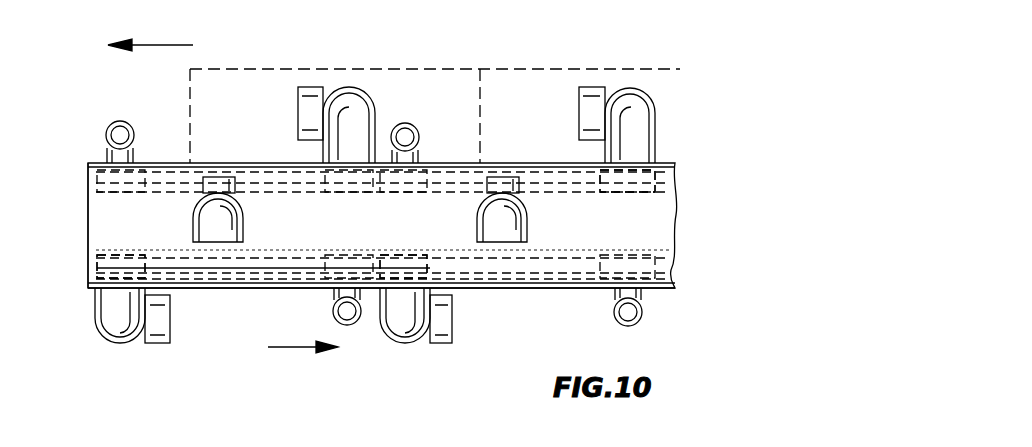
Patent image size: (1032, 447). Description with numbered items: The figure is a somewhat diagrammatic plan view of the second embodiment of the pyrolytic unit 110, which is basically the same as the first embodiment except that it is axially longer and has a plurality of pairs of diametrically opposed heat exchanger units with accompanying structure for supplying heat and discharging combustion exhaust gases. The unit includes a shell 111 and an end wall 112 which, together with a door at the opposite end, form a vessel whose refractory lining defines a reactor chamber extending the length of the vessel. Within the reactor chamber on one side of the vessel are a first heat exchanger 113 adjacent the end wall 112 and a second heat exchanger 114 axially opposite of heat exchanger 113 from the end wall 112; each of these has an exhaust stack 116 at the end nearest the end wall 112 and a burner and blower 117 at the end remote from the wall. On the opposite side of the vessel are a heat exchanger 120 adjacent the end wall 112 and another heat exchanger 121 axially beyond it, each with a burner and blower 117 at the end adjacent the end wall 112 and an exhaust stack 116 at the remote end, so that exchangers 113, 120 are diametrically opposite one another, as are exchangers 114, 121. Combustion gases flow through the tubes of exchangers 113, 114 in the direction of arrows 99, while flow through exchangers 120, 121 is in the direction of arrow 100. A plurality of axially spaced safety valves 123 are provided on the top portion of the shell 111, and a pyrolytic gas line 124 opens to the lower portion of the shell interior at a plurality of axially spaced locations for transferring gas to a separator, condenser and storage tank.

The arrows 99 is at (167, 45).
The arrow 100 is at (293, 347).
The second embodiment of the pyrolytic unit 110 is at (690, 213).
The shell 111 is at (570, 293).
The end wall 112 is at (88, 210).
The first heat exchanger 113 is at (263, 189).
The second heat exchanger 114 is at (540, 192).
The exhaust stack 116 is at (118, 134).
The burner and blower 117 is at (302, 106).
The heat exchanger 120 is at (198, 263).
The heat exchanger 121 is at (497, 265).
The safety valves 123 is at (493, 224).
The pyrolytic gas line 124 is at (498, 69).